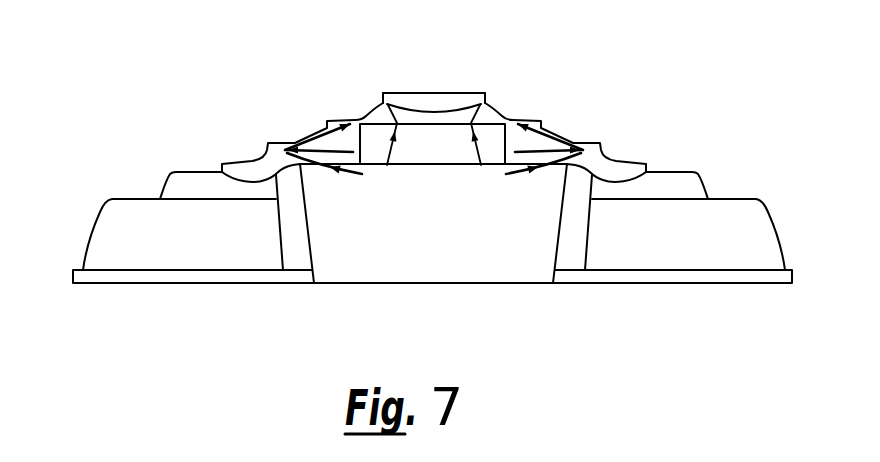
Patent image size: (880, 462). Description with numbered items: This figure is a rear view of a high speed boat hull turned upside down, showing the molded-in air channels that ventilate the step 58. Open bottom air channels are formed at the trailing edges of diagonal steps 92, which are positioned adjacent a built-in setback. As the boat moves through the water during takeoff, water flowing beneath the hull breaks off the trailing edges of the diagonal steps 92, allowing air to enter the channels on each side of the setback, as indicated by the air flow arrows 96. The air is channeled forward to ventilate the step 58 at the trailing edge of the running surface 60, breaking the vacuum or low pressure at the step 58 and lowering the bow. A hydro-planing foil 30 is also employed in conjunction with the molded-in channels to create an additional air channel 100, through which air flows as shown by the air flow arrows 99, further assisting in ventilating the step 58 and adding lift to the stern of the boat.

The hydro-planing foil 30 is at (397, 92).
The step 58 is at (459, 95).
The running surface 60 is at (412, 92).
The air channel 100 is at (485, 103).
The air flow arrows 99 is at (476, 156).
The diagonal steps 92 is at (344, 170).
The air flow arrows 96 is at (349, 172).